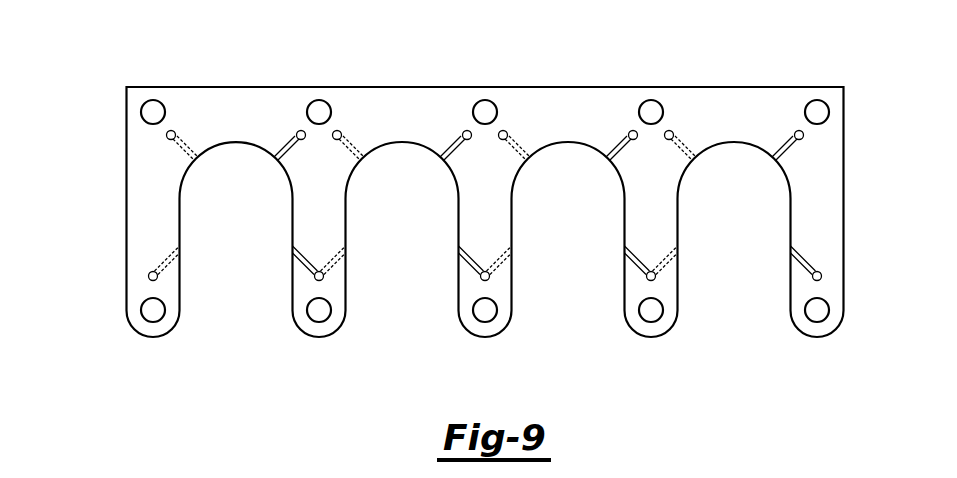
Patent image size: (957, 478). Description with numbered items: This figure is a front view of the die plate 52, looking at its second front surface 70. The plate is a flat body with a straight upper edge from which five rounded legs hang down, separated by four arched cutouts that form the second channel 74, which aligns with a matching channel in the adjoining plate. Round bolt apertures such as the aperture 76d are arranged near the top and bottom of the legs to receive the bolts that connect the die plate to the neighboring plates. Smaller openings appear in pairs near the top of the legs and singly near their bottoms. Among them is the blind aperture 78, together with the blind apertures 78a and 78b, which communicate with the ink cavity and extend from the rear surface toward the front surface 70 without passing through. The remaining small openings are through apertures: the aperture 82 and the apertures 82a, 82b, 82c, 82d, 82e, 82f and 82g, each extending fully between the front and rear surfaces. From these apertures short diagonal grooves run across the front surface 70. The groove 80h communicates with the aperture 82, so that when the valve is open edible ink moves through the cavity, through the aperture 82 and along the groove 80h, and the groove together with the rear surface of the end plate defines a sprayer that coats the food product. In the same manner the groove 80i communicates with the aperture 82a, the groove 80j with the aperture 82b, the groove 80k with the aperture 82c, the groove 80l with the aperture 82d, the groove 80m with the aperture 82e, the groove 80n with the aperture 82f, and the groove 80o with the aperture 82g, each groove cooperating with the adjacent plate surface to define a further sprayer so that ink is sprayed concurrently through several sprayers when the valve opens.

The die plate 52 is at (72, 158).
The second front surface 70 is at (143, 195).
The second channel 74 is at (180, 216).
The aperture 76d is at (150, 110).
The blind aperture 78 is at (172, 131).
The blind aperture 78a is at (148, 279).
The blind aperture 78b is at (338, 131).
The groove 80h is at (285, 158).
The groove 80i is at (306, 266).
The groove 80j is at (451, 158).
The groove 80k is at (458, 287).
The groove 80l is at (617, 158).
The groove 80m is at (624, 287).
The groove 80n is at (782, 158).
The groove 80o is at (804, 260).
The aperture 82 is at (299, 131).
The aperture 82a is at (325, 279).
The aperture 82b is at (465, 131).
The aperture 82c is at (491, 278).
The aperture 82d is at (630, 131).
The aperture 82e is at (657, 278).
The aperture 82f is at (796, 131).
The aperture 82g is at (822, 275).